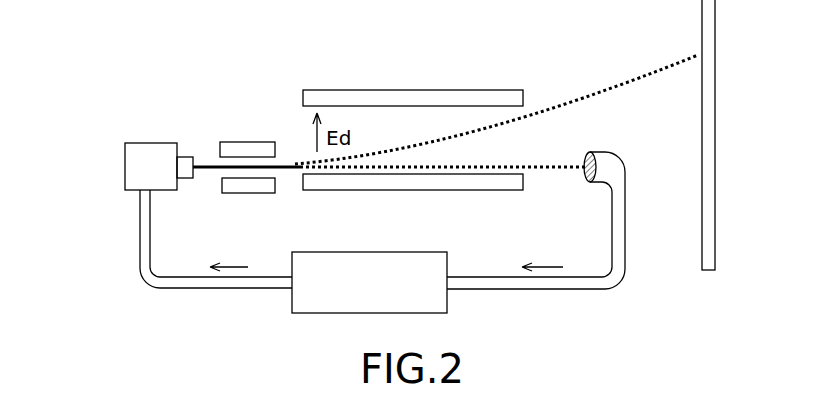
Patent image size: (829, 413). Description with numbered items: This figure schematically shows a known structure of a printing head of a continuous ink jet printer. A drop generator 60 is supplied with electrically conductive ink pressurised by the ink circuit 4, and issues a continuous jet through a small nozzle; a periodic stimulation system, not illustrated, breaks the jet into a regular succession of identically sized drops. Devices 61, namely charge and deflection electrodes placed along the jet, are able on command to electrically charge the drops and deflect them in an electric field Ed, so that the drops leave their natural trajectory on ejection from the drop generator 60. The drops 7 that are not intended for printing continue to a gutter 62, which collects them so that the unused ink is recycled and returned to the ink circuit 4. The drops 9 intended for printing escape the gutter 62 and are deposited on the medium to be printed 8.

The ink circuit 4 is at (318, 303).
The drops 7 is at (558, 172).
The medium to be printed 8 is at (706, 135).
The drops intended for printing 9 is at (607, 92).
The drop generator 60 is at (131, 161).
The devices 61 is at (469, 95).
The gutter 62 is at (610, 160).